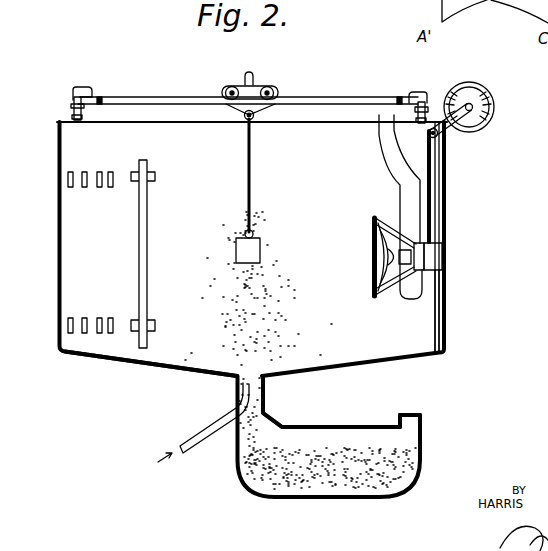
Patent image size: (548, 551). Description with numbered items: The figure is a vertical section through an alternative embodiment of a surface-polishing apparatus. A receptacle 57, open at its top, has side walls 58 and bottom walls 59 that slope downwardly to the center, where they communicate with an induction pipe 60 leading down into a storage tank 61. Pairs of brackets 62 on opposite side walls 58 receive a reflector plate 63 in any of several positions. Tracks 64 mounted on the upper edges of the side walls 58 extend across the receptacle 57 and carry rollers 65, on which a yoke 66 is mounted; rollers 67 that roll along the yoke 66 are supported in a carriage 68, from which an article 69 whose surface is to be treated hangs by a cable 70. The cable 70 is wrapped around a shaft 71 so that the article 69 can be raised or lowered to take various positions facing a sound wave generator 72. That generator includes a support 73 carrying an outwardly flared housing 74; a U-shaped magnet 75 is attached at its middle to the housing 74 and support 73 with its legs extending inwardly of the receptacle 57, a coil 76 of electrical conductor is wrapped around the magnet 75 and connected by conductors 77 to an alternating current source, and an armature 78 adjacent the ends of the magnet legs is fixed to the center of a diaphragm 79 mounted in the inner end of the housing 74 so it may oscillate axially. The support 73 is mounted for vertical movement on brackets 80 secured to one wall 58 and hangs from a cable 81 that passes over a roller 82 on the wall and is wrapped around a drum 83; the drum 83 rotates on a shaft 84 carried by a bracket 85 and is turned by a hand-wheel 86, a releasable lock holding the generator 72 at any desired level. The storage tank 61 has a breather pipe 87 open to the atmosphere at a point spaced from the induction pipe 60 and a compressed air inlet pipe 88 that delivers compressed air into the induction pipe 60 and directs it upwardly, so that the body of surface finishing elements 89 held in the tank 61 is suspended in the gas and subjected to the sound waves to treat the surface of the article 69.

The receptacle 57 is at (465, 210).
The side walls 58 is at (61, 148).
The bottom walls 59 is at (112, 363).
The induction pipe 60 is at (266, 385).
The storage tank 61 is at (344, 426).
The brackets 62 is at (76, 186).
The reflector plate 63 is at (139, 250).
The tracks 64 is at (72, 115).
The rollers 65 is at (75, 94).
The yoke 66 is at (155, 97).
The rollers 67 is at (226, 82).
The carriage 68 is at (248, 80).
The article 69 is at (235, 252).
The cable 70 is at (247, 191).
The shaft 71 is at (245, 122).
The sound wave generator 72 is at (456, 246).
The support 73 is at (431, 262).
The outwardly flared housing 74 is at (381, 293).
The U-shaped magnet 75 is at (411, 242).
The coil 76 is at (404, 293).
The conductors 77 is at (380, 158).
The armature 78 is at (388, 259).
The diaphragm 79 is at (371, 238).
The brackets 80 is at (443, 303).
The cable 81 is at (447, 183).
The roller 82 is at (444, 131).
The drum 83 is at (491, 100).
The shaft 84 is at (471, 104).
The bracket 85 is at (494, 108).
The hand-wheel 86 is at (461, 88).
The breather pipe 87 is at (409, 414).
The compressed air inlet pipe 88 is at (206, 442).
The surface finishing elements 89 is at (313, 480).